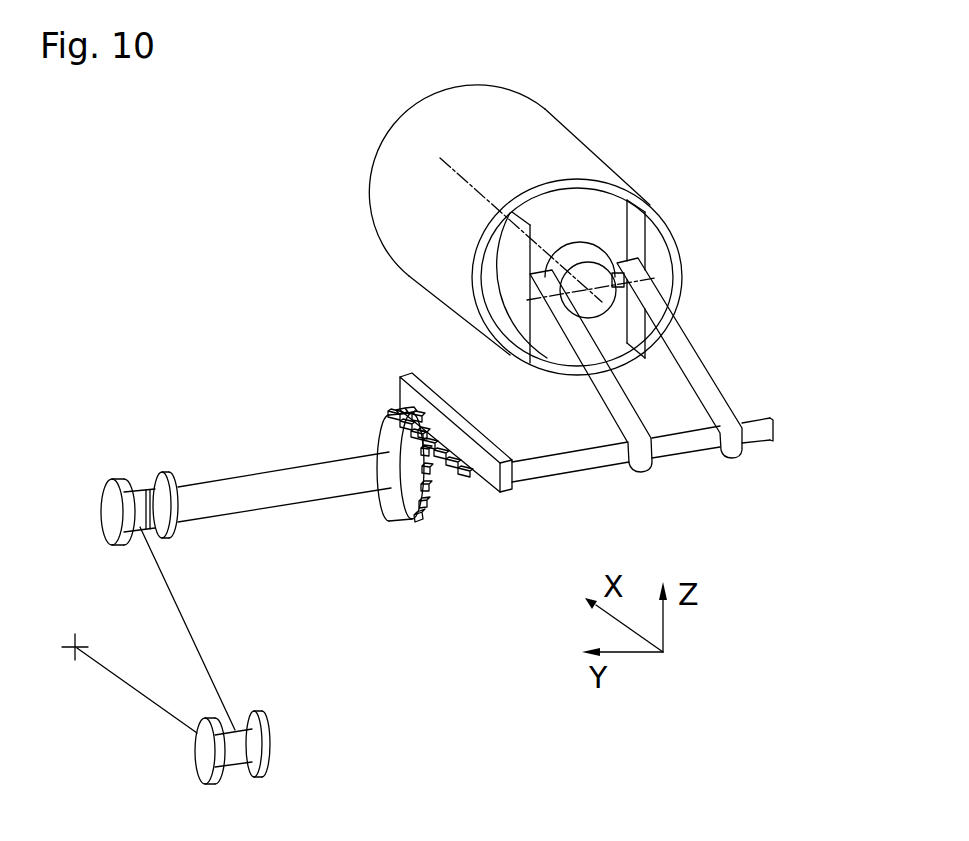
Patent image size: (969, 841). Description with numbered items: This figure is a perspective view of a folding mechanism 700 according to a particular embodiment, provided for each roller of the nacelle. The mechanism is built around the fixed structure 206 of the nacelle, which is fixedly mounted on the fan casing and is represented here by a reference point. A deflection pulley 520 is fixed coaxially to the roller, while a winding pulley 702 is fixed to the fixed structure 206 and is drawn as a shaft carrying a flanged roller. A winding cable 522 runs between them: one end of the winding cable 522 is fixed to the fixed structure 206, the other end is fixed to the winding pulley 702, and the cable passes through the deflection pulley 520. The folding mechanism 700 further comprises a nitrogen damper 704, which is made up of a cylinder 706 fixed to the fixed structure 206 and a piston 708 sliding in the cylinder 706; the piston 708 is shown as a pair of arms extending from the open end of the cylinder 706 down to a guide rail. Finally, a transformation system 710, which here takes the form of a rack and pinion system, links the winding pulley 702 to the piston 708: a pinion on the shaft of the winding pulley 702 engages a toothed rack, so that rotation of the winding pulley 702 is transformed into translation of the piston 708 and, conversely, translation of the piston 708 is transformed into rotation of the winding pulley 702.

The folding mechanism 700 is at (205, 304).
The winding pulley 702 is at (133, 488).
The nitrogen damper 704 is at (318, 179).
The cylinder 706 is at (572, 152).
The piston 708 is at (672, 272).
The transformation system 710 is at (338, 389).
The deflection pulley 520 is at (270, 762).
The winding cable 522 is at (203, 657).
The fixed structure 206 is at (72, 645).